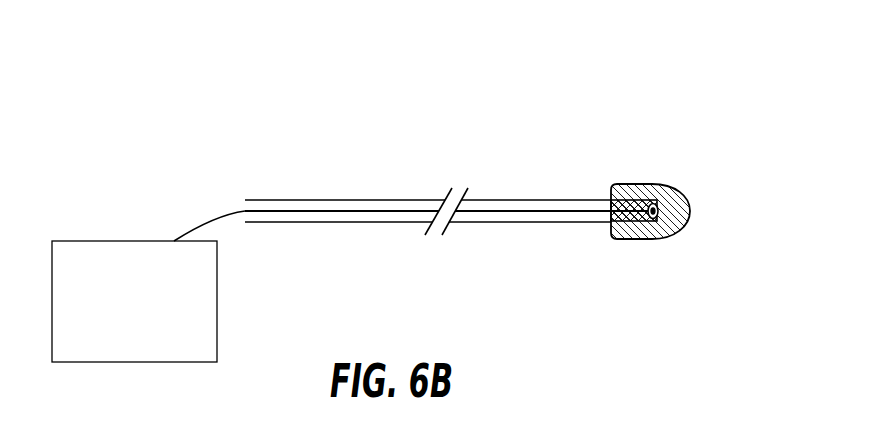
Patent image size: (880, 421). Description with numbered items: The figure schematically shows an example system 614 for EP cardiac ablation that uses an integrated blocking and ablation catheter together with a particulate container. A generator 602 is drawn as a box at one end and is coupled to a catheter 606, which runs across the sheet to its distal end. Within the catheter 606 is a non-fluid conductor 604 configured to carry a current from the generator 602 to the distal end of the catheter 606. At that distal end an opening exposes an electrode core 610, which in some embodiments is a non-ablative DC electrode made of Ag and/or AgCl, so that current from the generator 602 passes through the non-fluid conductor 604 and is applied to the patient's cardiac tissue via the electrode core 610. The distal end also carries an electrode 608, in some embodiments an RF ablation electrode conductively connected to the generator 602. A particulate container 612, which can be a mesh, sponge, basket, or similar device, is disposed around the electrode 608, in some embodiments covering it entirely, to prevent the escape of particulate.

The generator 602 is at (77, 255).
The non-fluid conductor 604 is at (213, 217).
The catheter 606 is at (307, 200).
The electrode 608 is at (633, 203).
The electrode core 610 is at (673, 188).
The particulate container 612 is at (658, 233).
The system 614 is at (535, 123).